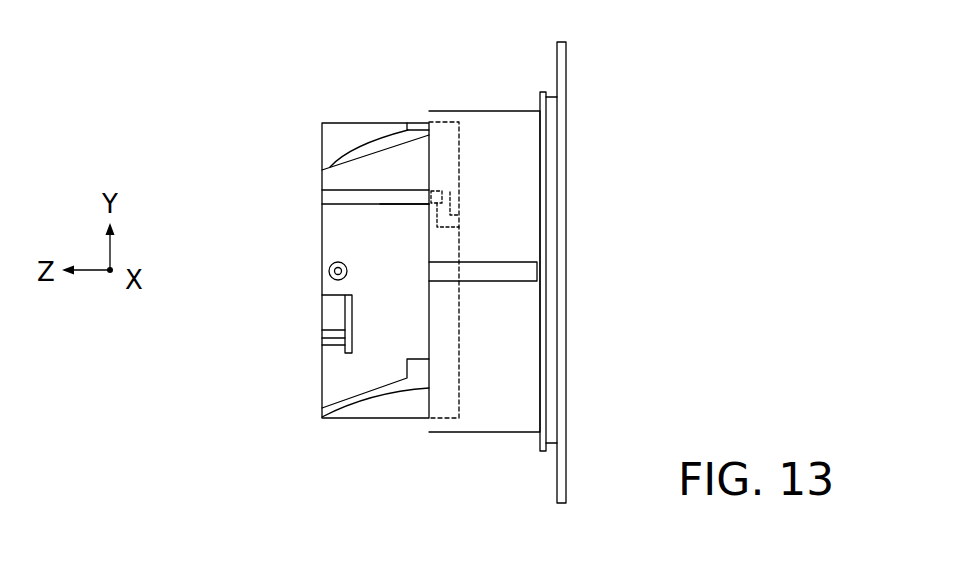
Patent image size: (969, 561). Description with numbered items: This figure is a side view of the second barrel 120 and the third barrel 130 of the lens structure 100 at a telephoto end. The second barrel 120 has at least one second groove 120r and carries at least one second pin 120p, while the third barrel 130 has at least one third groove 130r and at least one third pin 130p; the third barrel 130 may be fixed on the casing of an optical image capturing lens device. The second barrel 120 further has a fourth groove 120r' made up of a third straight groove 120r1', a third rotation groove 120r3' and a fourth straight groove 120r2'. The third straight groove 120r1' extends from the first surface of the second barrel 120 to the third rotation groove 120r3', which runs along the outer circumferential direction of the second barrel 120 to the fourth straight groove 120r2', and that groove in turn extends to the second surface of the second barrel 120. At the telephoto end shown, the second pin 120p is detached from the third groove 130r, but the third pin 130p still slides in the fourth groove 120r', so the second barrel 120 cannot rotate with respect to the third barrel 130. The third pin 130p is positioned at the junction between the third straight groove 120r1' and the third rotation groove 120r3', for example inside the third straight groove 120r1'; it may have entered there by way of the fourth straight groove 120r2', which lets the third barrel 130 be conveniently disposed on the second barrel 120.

The lens structure 100 is at (267, 103).
The second barrel 120 is at (334, 123).
The second groove 120r is at (333, 306).
The fourth groove 120r' is at (333, 221).
The third straight groove 120r1' is at (394, 131).
The fourth straight groove 120r2' is at (558, 231).
The third rotation groove 120r3' is at (555, 198).
The second pin 120p is at (329, 271).
The third barrel 130 is at (567, 85).
The third pin 130p is at (441, 190).
The third groove 130r is at (513, 272).